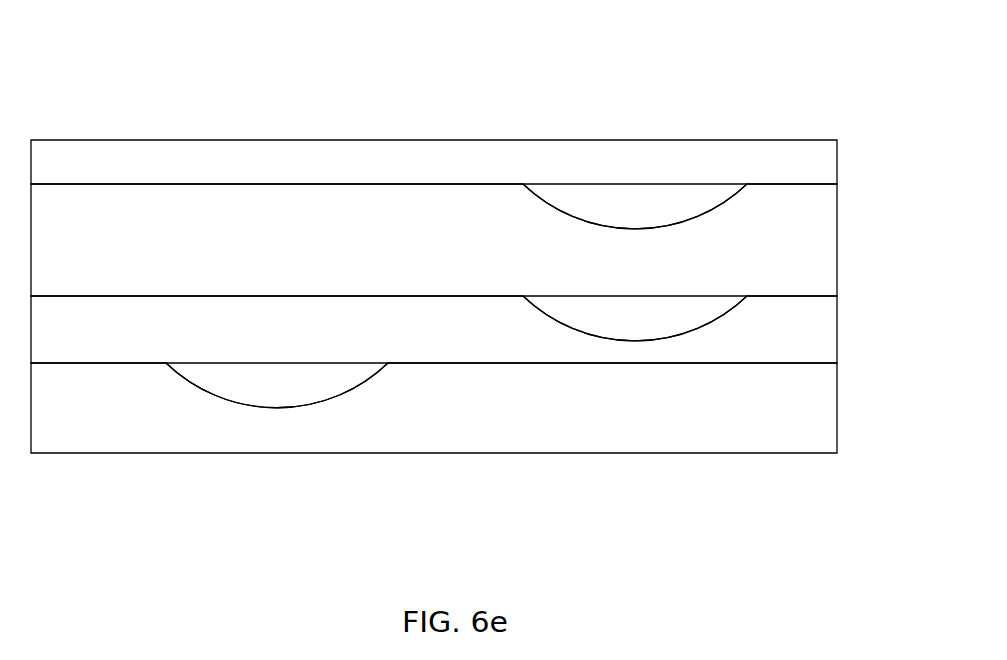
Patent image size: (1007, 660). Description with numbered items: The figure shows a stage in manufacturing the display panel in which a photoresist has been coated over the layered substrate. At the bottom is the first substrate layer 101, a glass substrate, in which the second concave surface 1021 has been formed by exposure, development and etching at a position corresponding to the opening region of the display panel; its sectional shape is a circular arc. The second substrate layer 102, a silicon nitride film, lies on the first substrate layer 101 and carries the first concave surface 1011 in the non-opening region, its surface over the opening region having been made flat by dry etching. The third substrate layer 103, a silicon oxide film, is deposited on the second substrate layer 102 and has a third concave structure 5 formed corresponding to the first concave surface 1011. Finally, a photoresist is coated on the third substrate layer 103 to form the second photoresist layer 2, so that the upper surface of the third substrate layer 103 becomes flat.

The second photoresist layer 2 is at (837, 162).
The third substrate layer 103 is at (837, 280).
The second substrate layer 102 is at (837, 340).
The first substrate layer 101 is at (837, 397).
The third concave structure 5 is at (583, 220).
The first concave surface 1011 is at (658, 338).
The second concave surface 1021 is at (281, 408).